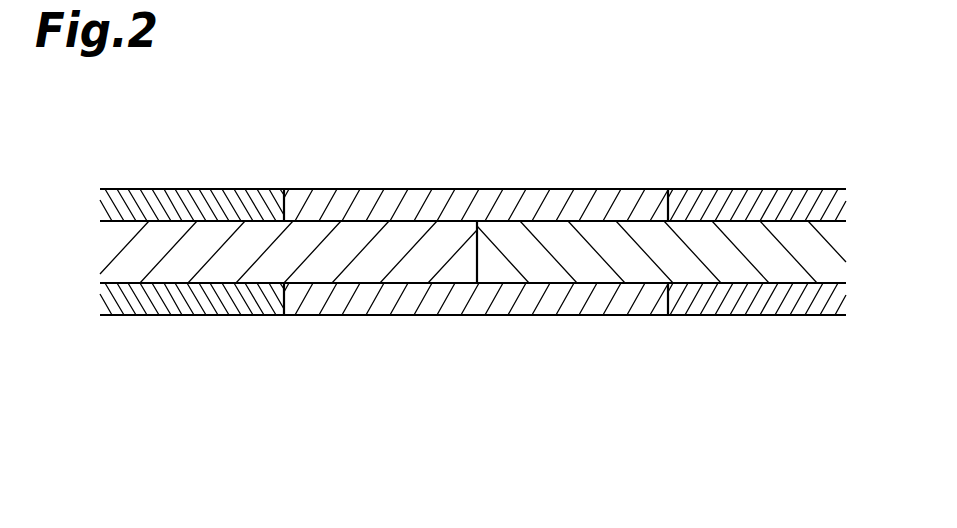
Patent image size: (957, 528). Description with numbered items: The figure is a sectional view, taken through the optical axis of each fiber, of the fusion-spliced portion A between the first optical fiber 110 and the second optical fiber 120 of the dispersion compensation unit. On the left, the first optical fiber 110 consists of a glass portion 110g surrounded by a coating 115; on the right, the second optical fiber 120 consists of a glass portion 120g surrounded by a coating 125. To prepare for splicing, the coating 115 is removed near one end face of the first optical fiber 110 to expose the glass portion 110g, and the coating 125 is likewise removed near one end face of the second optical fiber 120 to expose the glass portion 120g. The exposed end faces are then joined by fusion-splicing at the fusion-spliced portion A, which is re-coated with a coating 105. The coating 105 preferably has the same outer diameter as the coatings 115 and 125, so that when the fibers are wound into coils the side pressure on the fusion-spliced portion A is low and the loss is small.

The coating 105 is at (395, 190).
The first optical fiber 110 is at (288, 283).
The glass portion 110g is at (238, 272).
The coating 115 is at (188, 190).
The second optical fiber 120 is at (661, 283).
The glass portion 120g is at (827, 398).
The coating 125 is at (753, 189).
The fusion-spliced portion A is at (477, 205).